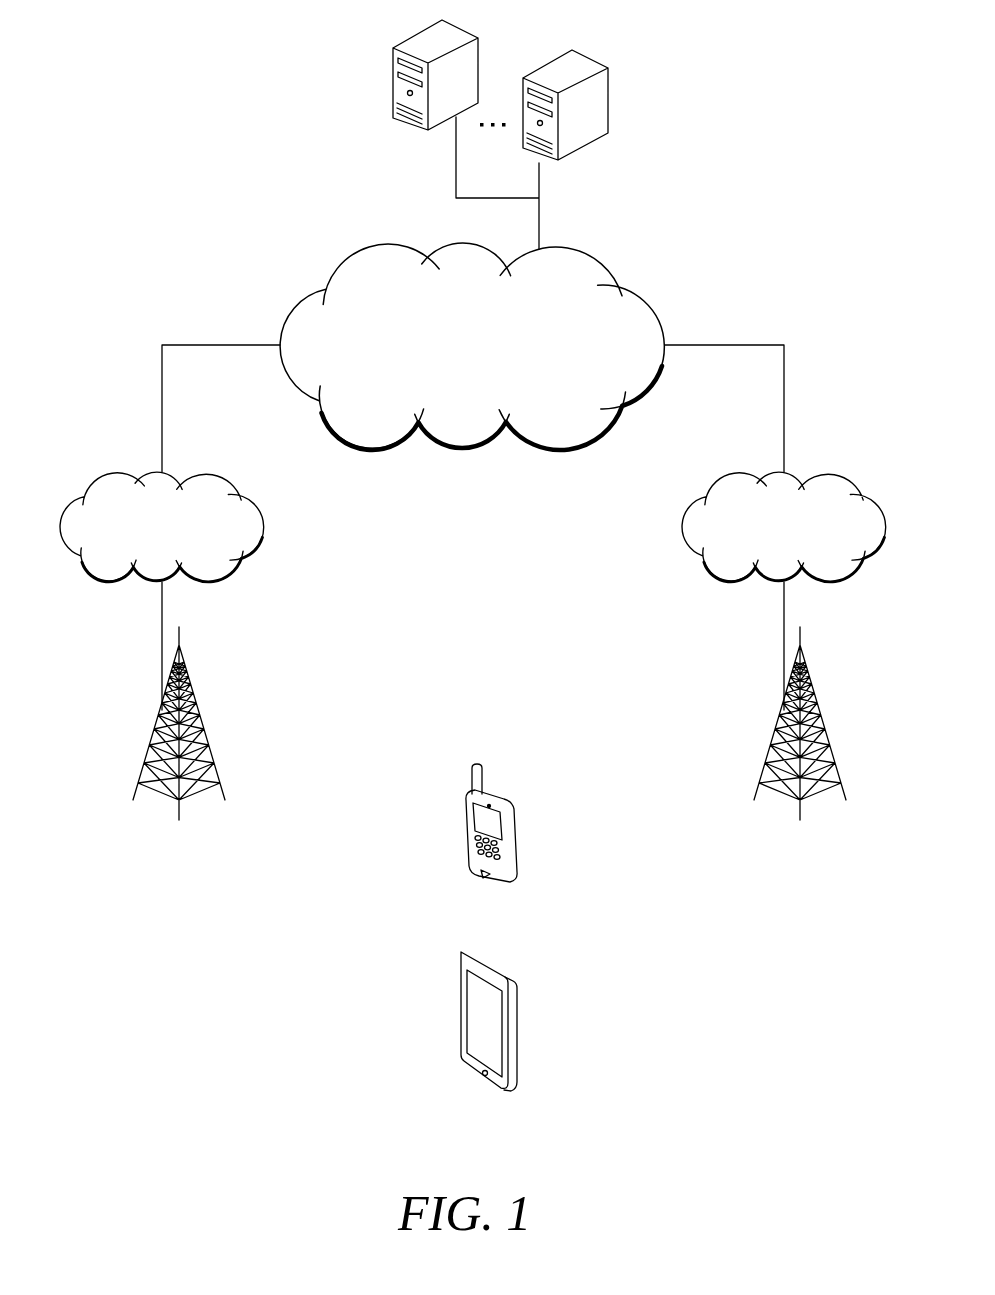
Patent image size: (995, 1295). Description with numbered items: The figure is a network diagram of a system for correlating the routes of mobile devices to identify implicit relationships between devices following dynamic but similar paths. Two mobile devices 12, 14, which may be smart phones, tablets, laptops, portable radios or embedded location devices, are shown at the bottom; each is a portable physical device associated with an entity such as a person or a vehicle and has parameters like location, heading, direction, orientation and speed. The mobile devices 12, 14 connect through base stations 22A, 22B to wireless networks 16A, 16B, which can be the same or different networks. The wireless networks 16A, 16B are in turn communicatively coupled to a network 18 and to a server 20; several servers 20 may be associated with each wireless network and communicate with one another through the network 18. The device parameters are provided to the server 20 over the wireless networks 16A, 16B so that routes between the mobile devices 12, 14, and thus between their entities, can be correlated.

The mobile device 12 is at (460, 975).
The mobile device 14 is at (463, 807).
The wireless network 16A is at (225, 475).
The wireless network 16B is at (845, 475).
The network 18 is at (637, 295).
The server 20 is at (587, 56).
The base station 22A is at (204, 736).
The base station 22B is at (824, 736).